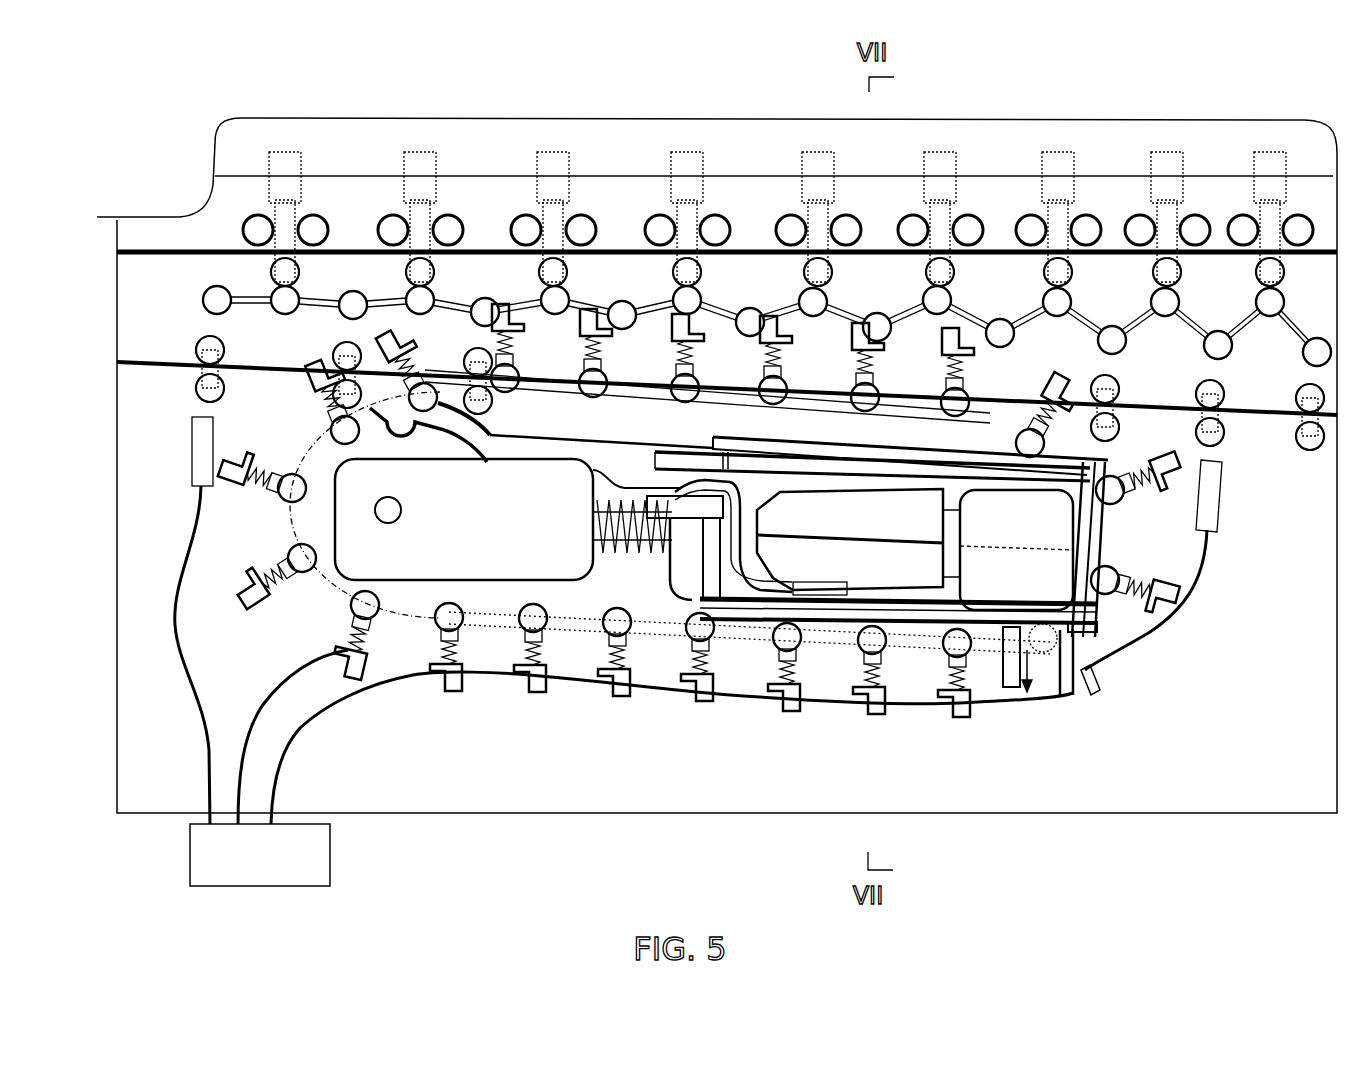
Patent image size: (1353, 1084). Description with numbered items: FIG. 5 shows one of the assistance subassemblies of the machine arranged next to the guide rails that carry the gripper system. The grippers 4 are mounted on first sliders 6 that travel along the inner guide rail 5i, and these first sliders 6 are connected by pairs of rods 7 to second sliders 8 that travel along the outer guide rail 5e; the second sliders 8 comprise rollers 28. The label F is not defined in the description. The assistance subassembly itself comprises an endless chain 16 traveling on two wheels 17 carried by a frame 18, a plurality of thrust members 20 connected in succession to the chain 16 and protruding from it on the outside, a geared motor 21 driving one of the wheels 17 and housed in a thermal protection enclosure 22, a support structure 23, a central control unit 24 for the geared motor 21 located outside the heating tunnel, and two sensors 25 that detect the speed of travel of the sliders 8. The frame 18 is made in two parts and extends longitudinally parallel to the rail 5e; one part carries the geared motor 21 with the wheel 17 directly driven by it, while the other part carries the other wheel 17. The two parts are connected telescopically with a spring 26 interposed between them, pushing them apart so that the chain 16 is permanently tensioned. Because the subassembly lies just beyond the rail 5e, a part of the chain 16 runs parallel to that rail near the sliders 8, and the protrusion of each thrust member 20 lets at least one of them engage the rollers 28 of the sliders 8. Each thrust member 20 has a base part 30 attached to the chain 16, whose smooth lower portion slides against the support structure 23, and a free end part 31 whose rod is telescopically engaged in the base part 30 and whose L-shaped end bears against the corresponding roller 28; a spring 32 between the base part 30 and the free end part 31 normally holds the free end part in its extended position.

The fabric F is at (556, 128).
The gripper 4 is at (1200, 178).
The outer guide rail 5e is at (272, 440).
The inner guide rail 5i is at (518, 425).
The first slider 6 is at (1078, 233).
The pair of rods 7 is at (787, 307).
The second slider 8 is at (205, 350).
The endless chain 16 is at (748, 640).
The wheel 17 is at (287, 517).
The frame 18 is at (657, 590).
The thrust member 20 is at (885, 677).
The geared motor 21 is at (858, 567).
The thermal protection enclosure 22 is at (1097, 617).
The support structure 23 is at (550, 430).
The central control unit 24 is at (300, 886).
The sensor 25 is at (193, 443).
The spring 26 is at (607, 560).
The roller 28 is at (657, 297).
The base part 30 is at (298, 575).
The free end part 31 is at (258, 608).
The spring 32 is at (240, 585).